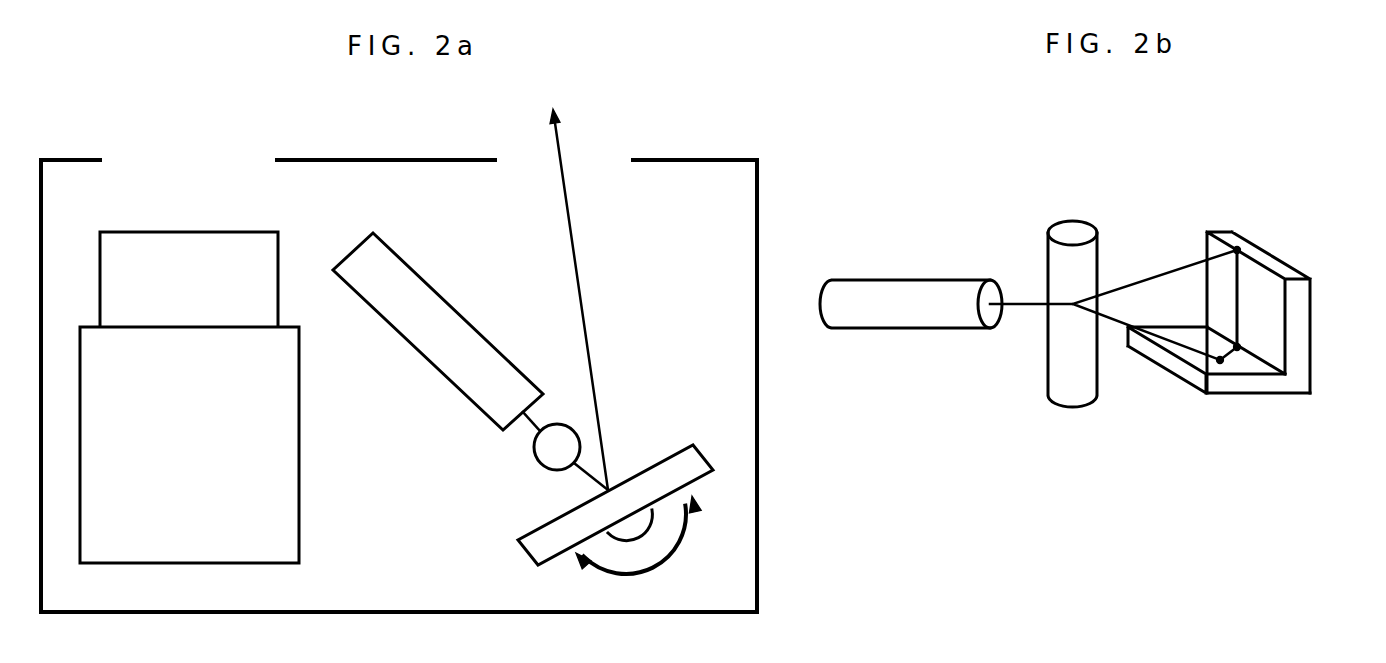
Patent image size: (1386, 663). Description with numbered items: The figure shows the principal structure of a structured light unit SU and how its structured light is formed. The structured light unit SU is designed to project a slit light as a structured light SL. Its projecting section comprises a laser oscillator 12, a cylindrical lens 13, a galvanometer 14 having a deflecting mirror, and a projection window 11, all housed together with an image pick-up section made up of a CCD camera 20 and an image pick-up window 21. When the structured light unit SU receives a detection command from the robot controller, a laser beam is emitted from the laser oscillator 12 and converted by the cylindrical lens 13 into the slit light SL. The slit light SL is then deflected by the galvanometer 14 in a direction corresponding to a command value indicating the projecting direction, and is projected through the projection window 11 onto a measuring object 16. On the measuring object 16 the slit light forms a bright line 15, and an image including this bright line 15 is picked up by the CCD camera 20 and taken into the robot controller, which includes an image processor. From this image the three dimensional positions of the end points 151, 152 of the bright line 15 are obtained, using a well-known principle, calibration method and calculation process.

In FIG. 2a, the projection window 11 is at (595, 177).
In FIG. 2a, the laser oscillator 12 is at (408, 320).
In FIG. 2b, the laser oscillator 12 is at (888, 319).
In FIG. 2a, the cylindrical lens 13 is at (536, 460).
In FIG. 2b, the cylindrical lens 13 is at (1071, 405).
In FIG. 2a, the galvanometer 14 is at (537, 563).
In FIG. 2b, the bright line 15 is at (1237, 307).
In FIG. 2b, the end point of the bright line 151 is at (1238, 251).
In FIG. 2b, the end point of the bright line 152 is at (1237, 350).
In FIG. 2b, the measuring object 16 is at (1295, 383).
In FIG. 2a, the CCD camera 20 is at (290, 489).
In FIG. 2a, the image pick-up window 21 is at (149, 160).
In FIG. 2a, the structured light (slit light) SL is at (558, 127).
In FIG. 2b, the structured light (slit light) SL is at (1162, 287).
In FIG. 2a, the structured light unit SU is at (768, 555).